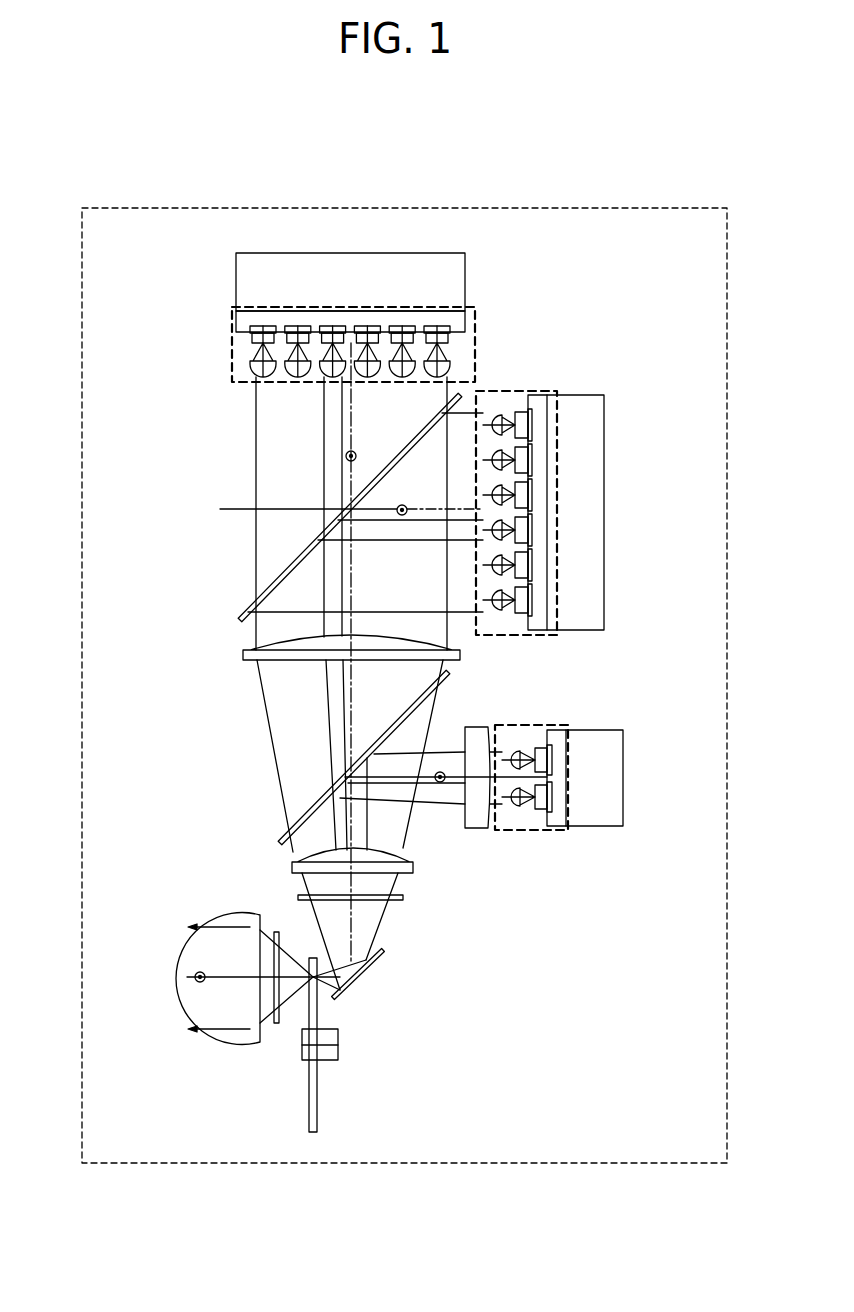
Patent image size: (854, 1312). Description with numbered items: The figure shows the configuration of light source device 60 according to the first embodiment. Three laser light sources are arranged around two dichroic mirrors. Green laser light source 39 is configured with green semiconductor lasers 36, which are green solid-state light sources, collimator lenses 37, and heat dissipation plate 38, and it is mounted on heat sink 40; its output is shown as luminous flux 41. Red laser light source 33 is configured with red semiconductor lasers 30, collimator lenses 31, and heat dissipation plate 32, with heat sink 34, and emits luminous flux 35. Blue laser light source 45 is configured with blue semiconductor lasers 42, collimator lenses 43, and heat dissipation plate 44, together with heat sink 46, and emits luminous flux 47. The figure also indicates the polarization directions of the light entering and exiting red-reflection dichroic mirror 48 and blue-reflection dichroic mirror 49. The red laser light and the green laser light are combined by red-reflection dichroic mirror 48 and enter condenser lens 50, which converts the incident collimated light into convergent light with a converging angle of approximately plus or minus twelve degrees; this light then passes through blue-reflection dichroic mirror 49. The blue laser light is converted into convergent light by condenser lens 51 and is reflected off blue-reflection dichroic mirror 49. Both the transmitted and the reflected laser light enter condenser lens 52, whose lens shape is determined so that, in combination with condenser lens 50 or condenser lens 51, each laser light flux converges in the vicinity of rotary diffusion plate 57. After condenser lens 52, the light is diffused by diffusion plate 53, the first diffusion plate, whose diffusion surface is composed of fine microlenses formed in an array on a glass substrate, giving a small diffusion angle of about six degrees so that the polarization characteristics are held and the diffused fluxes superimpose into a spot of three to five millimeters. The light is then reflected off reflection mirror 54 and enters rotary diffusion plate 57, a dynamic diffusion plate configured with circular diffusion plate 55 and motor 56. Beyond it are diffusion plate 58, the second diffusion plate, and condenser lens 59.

The red semiconductor lasers 30 is at (518, 615).
The collimator lenses 31 is at (495, 615).
The heat dissipation plate 32 is at (535, 627).
The red laser light source 33 is at (512, 388).
The heat sink 34 is at (593, 420).
The luminous flux 35 is at (392, 534).
The green semiconductor lasers 36 is at (450, 340).
The collimator lenses 37 is at (452, 367).
The heat dissipation plate 38 is at (458, 322).
The green laser light source 39 is at (228, 343).
The heat sink 40 is at (455, 265).
The luminous flux 41 is at (332, 473).
The blue semiconductor lasers 42 is at (540, 808).
The collimator lenses 43 is at (517, 807).
The heat dissipation plate 44 is at (553, 818).
The blue laser light source 45 is at (555, 725).
The heat sink 46 is at (610, 780).
The luminous flux 47 is at (502, 817).
The red-reflection dichroic mirror 48 is at (243, 613).
The blue-reflection dichroic mirror 49 is at (290, 835).
The condenser lens 50 is at (243, 653).
The condenser lens 51 is at (472, 828).
The condenser lens 52 is at (288, 867).
The diffusion plate 53 is at (298, 895).
The reflection mirror 54 is at (368, 960).
The circular diffusion plate 55 is at (318, 1097).
The motor 56 is at (368, 1053).
The rotary diffusion plate 57 is at (398, 1045).
The diffusion plate 58 is at (278, 1025).
The condenser lens 59 is at (240, 1037).
The light source device 60 is at (728, 537).